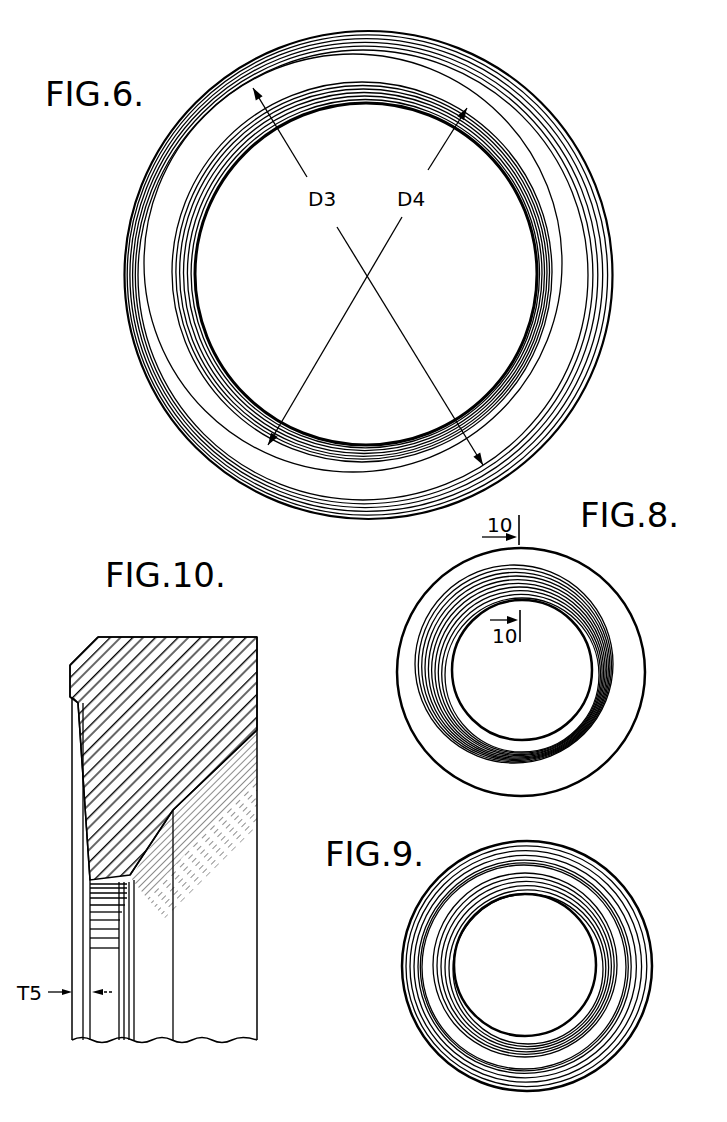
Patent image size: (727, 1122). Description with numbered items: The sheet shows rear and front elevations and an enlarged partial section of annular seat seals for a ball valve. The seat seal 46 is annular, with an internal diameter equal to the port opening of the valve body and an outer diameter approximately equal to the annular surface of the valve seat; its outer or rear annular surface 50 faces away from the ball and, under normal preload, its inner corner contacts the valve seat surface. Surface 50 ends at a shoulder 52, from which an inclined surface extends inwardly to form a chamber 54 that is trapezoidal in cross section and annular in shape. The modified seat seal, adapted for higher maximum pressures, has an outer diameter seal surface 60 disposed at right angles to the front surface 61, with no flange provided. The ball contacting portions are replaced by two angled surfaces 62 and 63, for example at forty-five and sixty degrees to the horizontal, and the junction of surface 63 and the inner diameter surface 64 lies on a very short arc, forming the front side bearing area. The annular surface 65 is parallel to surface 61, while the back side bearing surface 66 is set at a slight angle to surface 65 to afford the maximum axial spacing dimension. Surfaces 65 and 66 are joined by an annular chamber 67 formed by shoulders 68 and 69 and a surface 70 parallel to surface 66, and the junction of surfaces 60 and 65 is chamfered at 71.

In FIG. 6, the seat seal 46 is at (145, 398).
In FIG. 6, the outer or rear annular surface 50 is at (578, 320).
In FIG. 6, the shoulder 52 is at (564, 247).
In FIG. 6, the chamber 54 is at (517, 395).
In FIG. 8, the outer diameter seal surface 60 is at (633, 616).
In FIG. 9, the outer diameter seal surface 60 is at (402, 960).
In FIG. 10, the outer diameter seal surface 60 is at (207, 637).
In FIG. 8, the front surface 61 is at (428, 601).
In FIG. 10, the front surface 61 is at (258, 690).
In FIG. 8, the angled surface 62 is at (430, 700).
In FIG. 10, the angled surface 62 is at (227, 752).
In FIG. 8, the angled surface 63 is at (563, 736).
In FIG. 10, the angled surface 63 is at (140, 862).
In FIG. 8, the inner diameter surface 64 is at (483, 728).
In FIG. 9, the inner diameter surface 64 is at (481, 1018).
In FIG. 10, the inner diameter surface 64 is at (107, 885).
In FIG. 9, the annular surface 65 is at (629, 920).
In FIG. 10, the annular surface 65 is at (69, 682).
In FIG. 9, the back side bearing surface 66 is at (593, 932).
In FIG. 10, the back side bearing surface 66 is at (90, 862).
In FIG. 10, the annular chamber 67 is at (73, 788).
In FIG. 9, the shoulder 68 is at (613, 1027).
In FIG. 10, the shoulder 68 is at (77, 702).
In FIG. 9, the shoulder 69 is at (557, 1040).
In FIG. 10, the shoulder 69 is at (86, 822).
In FIG. 9, the surface 70 is at (438, 1017).
In FIG. 10, the surface 70 is at (84, 754).
In FIG. 9, the chamfer 71 is at (637, 1008).
In FIG. 10, the chamfer 71 is at (87, 655).